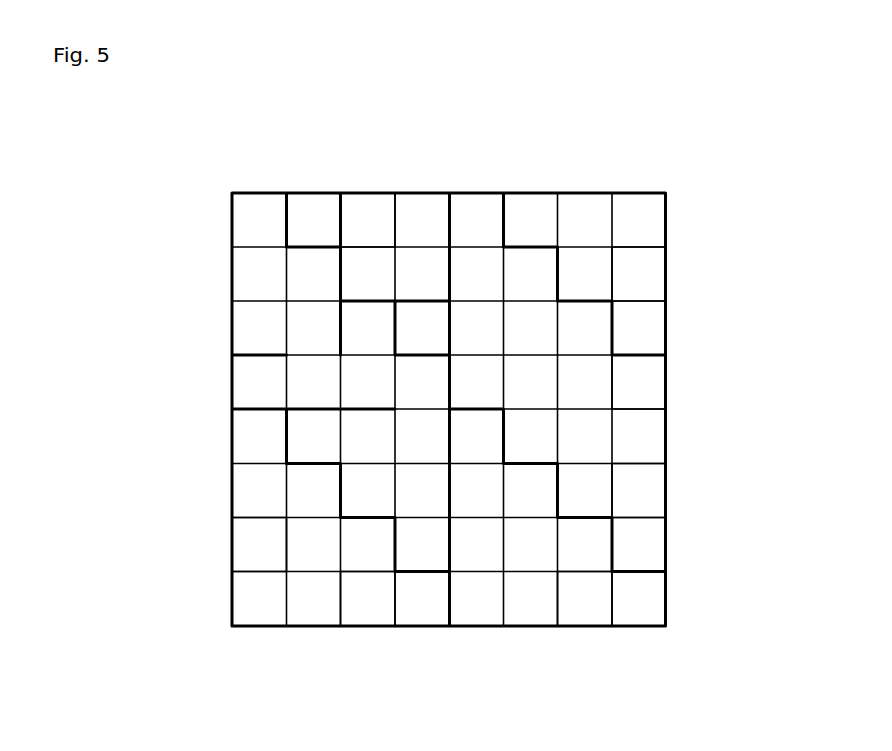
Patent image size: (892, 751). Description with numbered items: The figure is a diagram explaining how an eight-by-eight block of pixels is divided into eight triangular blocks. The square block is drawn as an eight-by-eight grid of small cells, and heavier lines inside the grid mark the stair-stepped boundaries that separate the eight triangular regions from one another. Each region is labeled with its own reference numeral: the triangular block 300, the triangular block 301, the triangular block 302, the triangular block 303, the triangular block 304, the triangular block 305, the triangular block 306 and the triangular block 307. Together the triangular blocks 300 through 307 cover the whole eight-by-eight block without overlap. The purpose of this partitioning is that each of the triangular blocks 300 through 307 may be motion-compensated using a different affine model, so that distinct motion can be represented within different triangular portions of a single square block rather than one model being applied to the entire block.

The triangular block 300 is at (255, 326).
The triangular block 301 is at (368, 225).
The triangular block 302 is at (645, 384).
The triangular block 303 is at (647, 272).
The triangular block 304 is at (257, 528).
The triangular block 305 is at (363, 598).
The triangular block 306 is at (572, 596).
The triangular block 307 is at (645, 498).